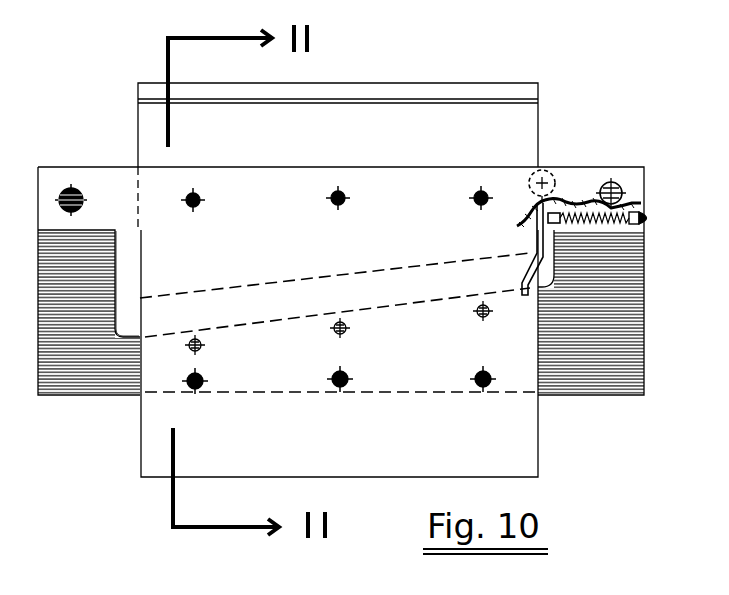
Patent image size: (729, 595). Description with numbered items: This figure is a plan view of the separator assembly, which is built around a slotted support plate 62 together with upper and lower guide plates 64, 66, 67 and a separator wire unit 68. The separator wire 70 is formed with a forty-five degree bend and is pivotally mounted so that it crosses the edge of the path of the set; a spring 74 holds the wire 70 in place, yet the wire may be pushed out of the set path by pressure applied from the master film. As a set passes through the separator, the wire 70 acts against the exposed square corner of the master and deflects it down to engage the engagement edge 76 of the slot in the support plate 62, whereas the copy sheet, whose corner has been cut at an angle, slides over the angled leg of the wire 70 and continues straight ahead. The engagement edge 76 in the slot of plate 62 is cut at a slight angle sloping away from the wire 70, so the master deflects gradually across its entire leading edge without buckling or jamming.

The slotted support plate 62 is at (648, 325).
The upper guide plate 64 is at (508, 137).
The guide plate 66 is at (538, 92).
The lower guide plate 67 is at (540, 432).
The separator wire unit 68 is at (624, 149).
The separator wire 70 is at (544, 262).
The spring 74 is at (595, 213).
The engagement edge 76 is at (177, 335).